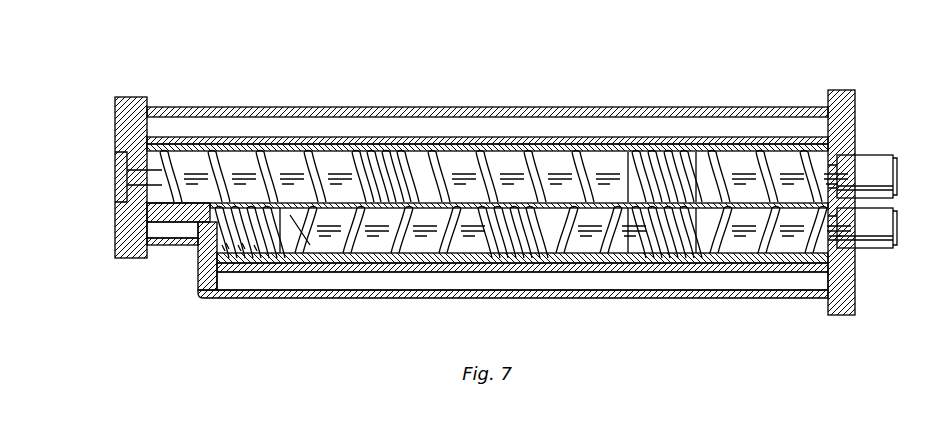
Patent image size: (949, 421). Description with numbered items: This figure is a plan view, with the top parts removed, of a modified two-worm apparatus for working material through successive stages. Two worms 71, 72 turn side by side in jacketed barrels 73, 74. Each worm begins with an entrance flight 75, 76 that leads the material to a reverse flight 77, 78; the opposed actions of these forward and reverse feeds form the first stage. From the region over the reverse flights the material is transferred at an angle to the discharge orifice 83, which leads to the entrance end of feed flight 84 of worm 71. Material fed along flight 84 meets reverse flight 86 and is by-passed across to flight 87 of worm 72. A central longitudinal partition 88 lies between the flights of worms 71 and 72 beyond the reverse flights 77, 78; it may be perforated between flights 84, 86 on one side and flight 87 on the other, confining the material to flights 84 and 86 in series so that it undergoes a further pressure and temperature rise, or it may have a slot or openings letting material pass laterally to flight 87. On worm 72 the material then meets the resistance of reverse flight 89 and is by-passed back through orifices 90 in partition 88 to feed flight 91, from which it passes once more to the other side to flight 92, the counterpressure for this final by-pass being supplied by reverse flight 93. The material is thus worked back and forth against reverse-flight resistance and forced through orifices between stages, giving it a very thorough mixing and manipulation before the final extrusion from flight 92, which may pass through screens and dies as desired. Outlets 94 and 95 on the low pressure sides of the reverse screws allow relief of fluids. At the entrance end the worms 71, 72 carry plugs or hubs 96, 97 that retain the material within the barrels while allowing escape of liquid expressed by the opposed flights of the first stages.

The worm 71 is at (390, 240).
The worm 72 is at (467, 174).
The jacketed barrel 73 is at (723, 267).
The jacketed barrel 74 is at (686, 147).
The entrance flight 75 is at (780, 245).
The entrance flight 76 is at (772, 177).
The reverse flight 77 is at (658, 237).
The reverse flight 78 is at (662, 178).
The discharge orifice 83 is at (598, 213).
The feed flight 84 is at (560, 235).
The reverse flight 86 is at (497, 230).
The flight 87 is at (556, 177).
The central longitudinal partition 88 is at (305, 180).
The reverse flight 89 is at (386, 172).
The orifices 90 is at (287, 252).
The feed flight 91 is at (323, 242).
The flight 92 is at (200, 178).
The reverse flight 93 is at (247, 246).
The outlet 94 is at (347, 176).
The outlet 95 is at (644, 192).
The plug or hub 96 is at (872, 165).
The plug or hub 97 is at (866, 238).